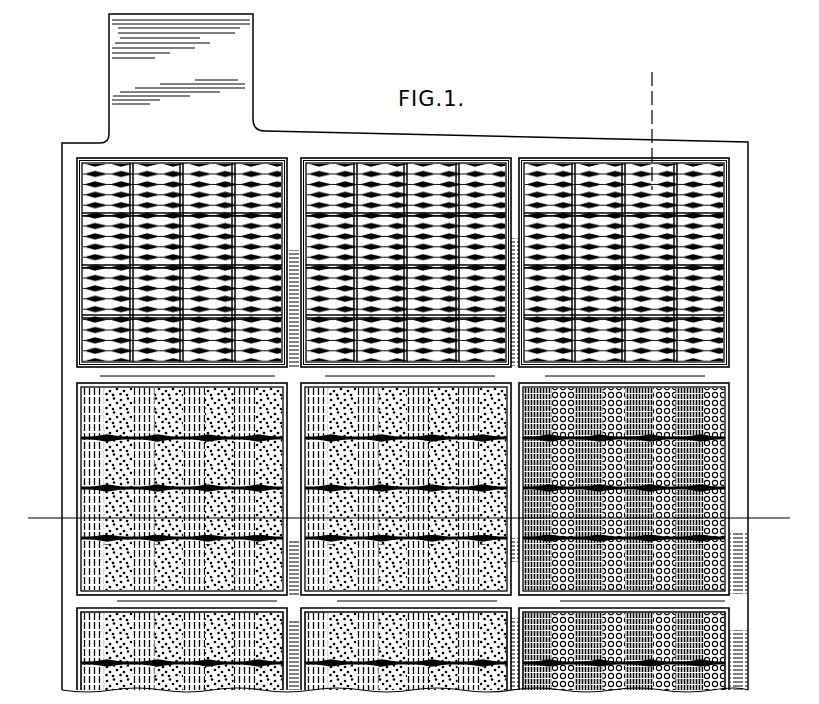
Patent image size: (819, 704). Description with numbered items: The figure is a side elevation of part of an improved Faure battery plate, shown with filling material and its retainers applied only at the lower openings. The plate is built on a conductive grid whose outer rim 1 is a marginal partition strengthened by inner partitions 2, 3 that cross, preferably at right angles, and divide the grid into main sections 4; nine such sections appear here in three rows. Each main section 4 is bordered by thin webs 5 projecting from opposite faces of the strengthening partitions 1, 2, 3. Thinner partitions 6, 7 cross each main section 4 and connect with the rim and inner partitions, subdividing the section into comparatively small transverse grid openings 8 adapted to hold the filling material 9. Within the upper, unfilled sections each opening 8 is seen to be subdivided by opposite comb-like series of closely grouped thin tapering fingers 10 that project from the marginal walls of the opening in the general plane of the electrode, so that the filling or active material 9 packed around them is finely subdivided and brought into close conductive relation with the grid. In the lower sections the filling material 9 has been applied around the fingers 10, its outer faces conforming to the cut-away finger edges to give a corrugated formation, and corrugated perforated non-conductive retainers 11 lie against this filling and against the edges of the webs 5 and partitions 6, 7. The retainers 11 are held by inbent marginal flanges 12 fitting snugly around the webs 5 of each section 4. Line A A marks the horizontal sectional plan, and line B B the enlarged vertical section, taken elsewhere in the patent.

The outer rim 1 is at (65, 228).
The inner partition 2 is at (292, 166).
The inner partition 3 is at (78, 380).
The main section 4 is at (403, 262).
The web 5 is at (78, 188).
The partition 6 is at (180, 170).
The partition 7 is at (77, 268).
The grid opening 8 is at (105, 178).
The filling material 9 is at (222, 694).
The finger 10 is at (77, 338).
The retainer 11 is at (728, 453).
The inbent marginal flange 12 is at (735, 413).
The section line A A is at (405, 520).
The section line B B is at (646, 119).